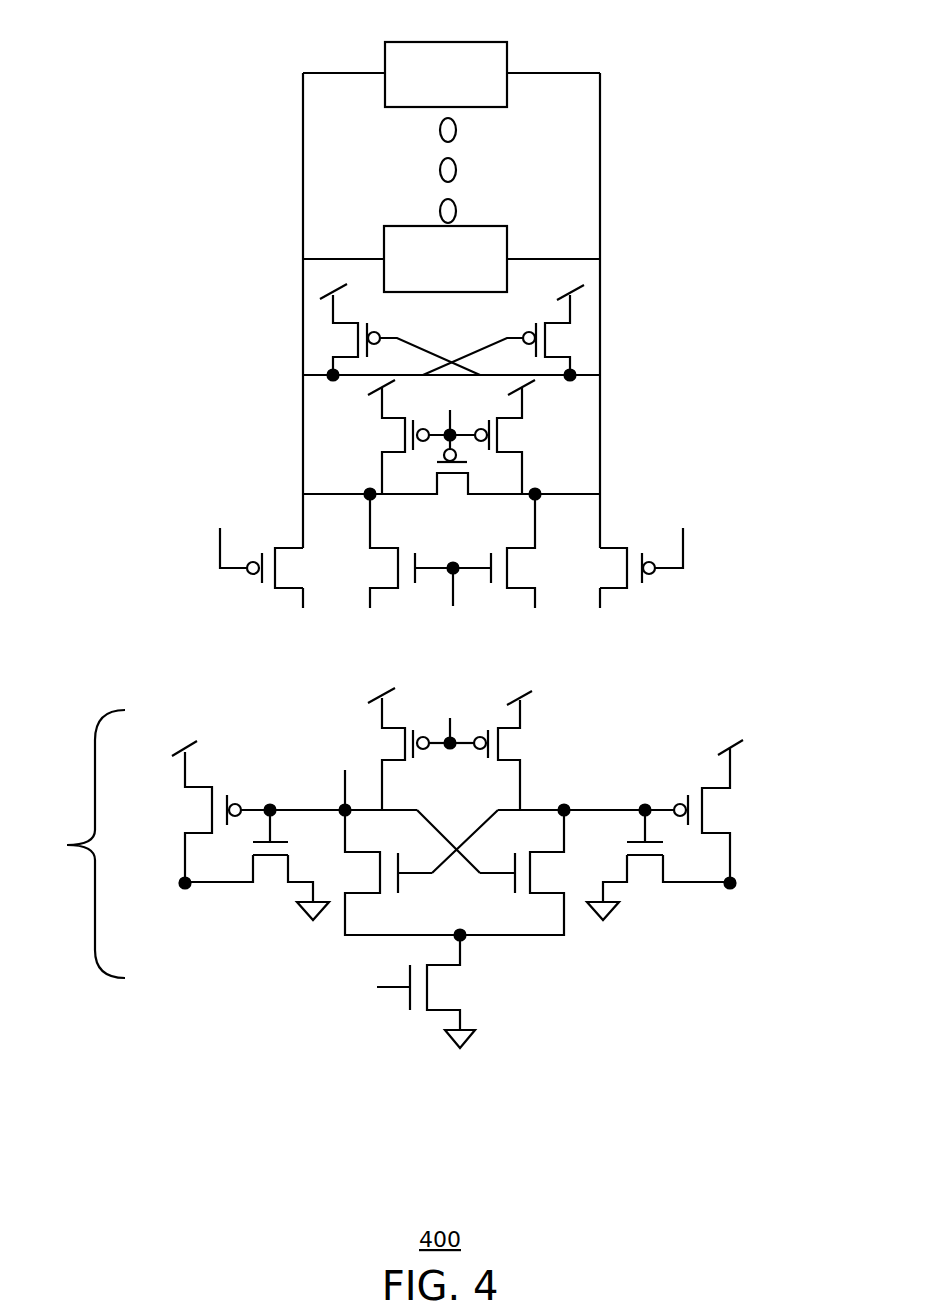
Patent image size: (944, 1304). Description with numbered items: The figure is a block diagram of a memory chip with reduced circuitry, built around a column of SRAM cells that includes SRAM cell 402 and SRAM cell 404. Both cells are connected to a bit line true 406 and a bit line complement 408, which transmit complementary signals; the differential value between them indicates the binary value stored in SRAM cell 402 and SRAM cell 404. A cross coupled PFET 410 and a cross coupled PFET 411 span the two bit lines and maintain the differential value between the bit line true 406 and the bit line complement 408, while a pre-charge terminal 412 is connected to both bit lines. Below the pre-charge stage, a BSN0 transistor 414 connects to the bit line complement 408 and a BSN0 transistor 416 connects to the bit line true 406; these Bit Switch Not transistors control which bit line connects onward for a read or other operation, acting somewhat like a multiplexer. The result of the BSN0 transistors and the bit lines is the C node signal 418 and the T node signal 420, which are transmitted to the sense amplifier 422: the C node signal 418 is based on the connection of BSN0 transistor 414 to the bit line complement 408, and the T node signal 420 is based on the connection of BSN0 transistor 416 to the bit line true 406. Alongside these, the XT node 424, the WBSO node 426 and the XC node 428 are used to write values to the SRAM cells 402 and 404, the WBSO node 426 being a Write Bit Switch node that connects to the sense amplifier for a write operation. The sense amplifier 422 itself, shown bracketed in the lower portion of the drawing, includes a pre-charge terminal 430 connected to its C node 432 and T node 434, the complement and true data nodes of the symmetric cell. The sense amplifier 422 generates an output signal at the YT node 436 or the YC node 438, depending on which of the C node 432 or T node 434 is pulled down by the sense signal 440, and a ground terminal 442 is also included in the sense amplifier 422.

The SRAM cell 402 is at (405, 42).
The SRAM cell 404 is at (478, 226).
The bit line true 406 is at (600, 130).
The bit line complement 408 is at (303, 135).
The cross coupled PFET 410 is at (508, 337).
The cross coupled PFET 411 is at (387, 337).
The pre-charge terminal 412 is at (478, 398).
The BSN0 transistor 414 is at (207, 477).
The BSN0 transistor 416 is at (685, 478).
The C node signal 418 is at (287, 643).
The T node signal 420 is at (605, 645).
The sense amplifier 422 is at (399, 913).
The XT node 424 is at (360, 648).
The WBSO node 426 is at (457, 647).
The XC node 428 is at (539, 645).
The pre-charge terminal 430 is at (443, 749).
The C node 432 is at (382, 762).
The T node 434 is at (520, 762).
The YT node 436 is at (185, 893).
The YC node 438 is at (730, 893).
The sense signal 440 is at (320, 990).
The ground terminal 442 is at (450, 1047).